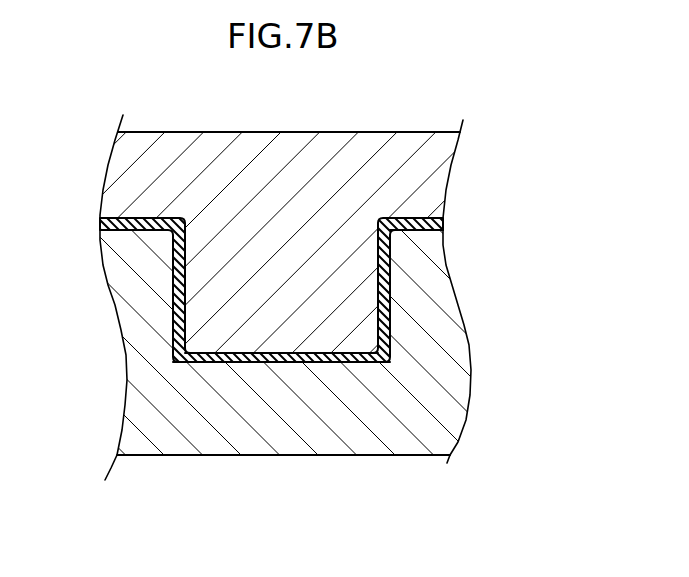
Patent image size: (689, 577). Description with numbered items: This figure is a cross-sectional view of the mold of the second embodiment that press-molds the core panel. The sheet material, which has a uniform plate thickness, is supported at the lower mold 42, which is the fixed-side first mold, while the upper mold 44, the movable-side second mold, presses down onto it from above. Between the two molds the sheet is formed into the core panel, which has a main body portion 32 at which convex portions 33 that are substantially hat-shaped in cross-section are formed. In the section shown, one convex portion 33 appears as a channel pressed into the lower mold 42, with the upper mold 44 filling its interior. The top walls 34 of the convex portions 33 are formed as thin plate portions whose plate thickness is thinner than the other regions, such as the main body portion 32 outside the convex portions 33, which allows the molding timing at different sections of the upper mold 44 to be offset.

The upper mold 44 is at (293, 130).
The lower mold 42 is at (403, 457).
The main body portion 32 is at (132, 216).
The convex portions 33 is at (247, 364).
The top walls 34 is at (318, 363).